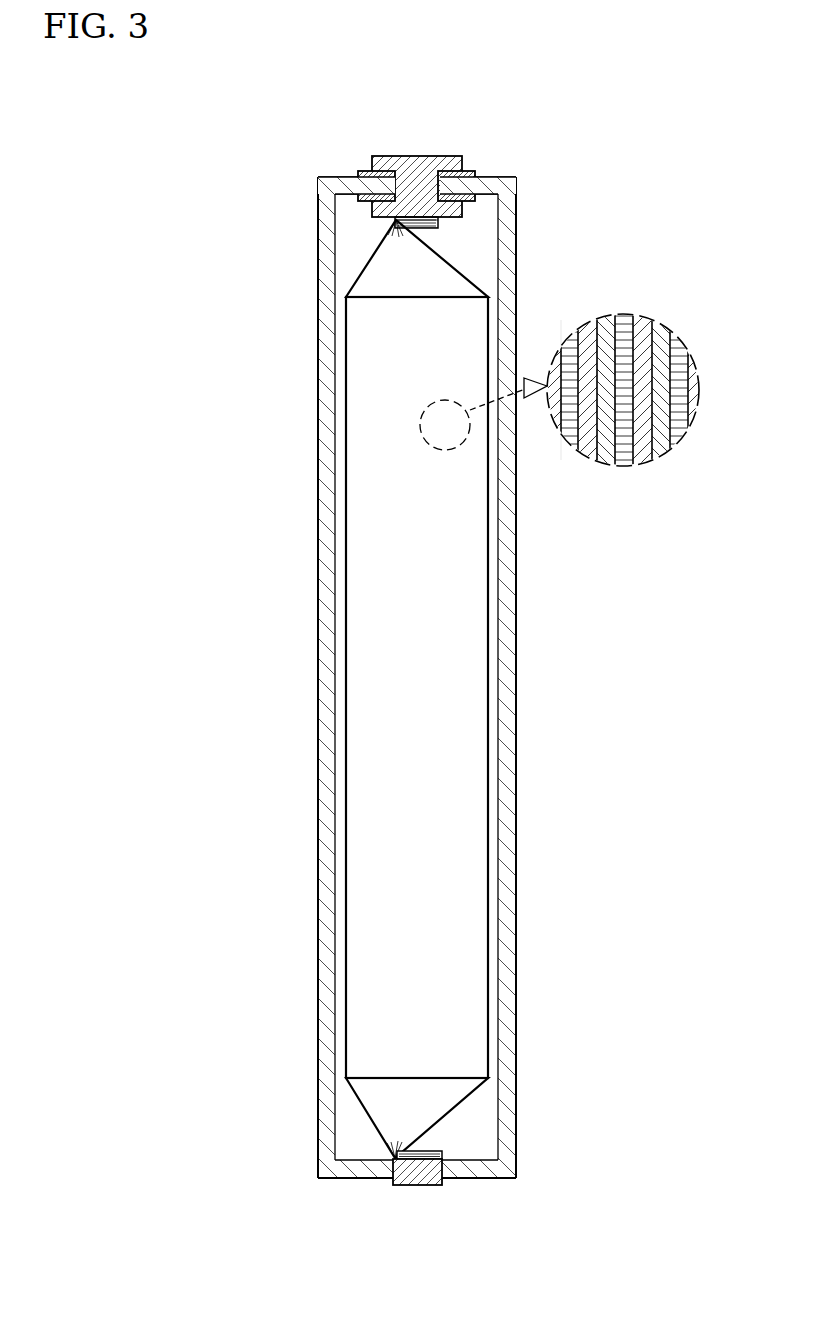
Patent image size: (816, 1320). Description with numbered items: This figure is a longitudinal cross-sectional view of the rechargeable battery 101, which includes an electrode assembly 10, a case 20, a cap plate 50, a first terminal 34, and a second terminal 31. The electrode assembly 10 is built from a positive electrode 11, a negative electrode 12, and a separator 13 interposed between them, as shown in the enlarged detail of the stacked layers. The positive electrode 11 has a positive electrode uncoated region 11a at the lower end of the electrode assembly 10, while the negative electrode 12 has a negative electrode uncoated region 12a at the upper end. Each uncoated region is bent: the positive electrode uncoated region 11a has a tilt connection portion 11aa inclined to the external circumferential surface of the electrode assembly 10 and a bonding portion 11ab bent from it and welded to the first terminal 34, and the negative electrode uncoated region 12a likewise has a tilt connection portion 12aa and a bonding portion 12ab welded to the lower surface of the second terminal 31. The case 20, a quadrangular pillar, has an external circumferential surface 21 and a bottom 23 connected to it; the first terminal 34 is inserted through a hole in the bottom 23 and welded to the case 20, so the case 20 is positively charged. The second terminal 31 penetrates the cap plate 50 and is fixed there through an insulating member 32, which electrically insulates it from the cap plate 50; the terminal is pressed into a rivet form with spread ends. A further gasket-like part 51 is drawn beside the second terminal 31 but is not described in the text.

The rechargeable battery 101 is at (306, 80).
The electrode assembly 10 is at (474, 629).
The positive electrode 11 is at (573, 445).
The negative electrode 12 is at (607, 452).
The separator 13 is at (660, 443).
The positive electrode uncoated region 11a is at (606, 1095).
The tilt connection portion 11aa is at (438, 1112).
The bonding portion 11ab is at (422, 1152).
The negative electrode uncoated region 12a is at (606, 207).
The tilt connection portion 12aa is at (432, 262).
The bonding portion 12ab is at (425, 224).
The case 20 is at (530, 738).
The external circumferential surface 21 is at (505, 825).
The bottom 23 is at (485, 1168).
The second terminal 31 is at (405, 163).
The insulating member 32 is at (361, 170).
The first terminal 34 is at (413, 1178).
The cap plate 50 is at (490, 180).
The gasket 51 is at (440, 183).